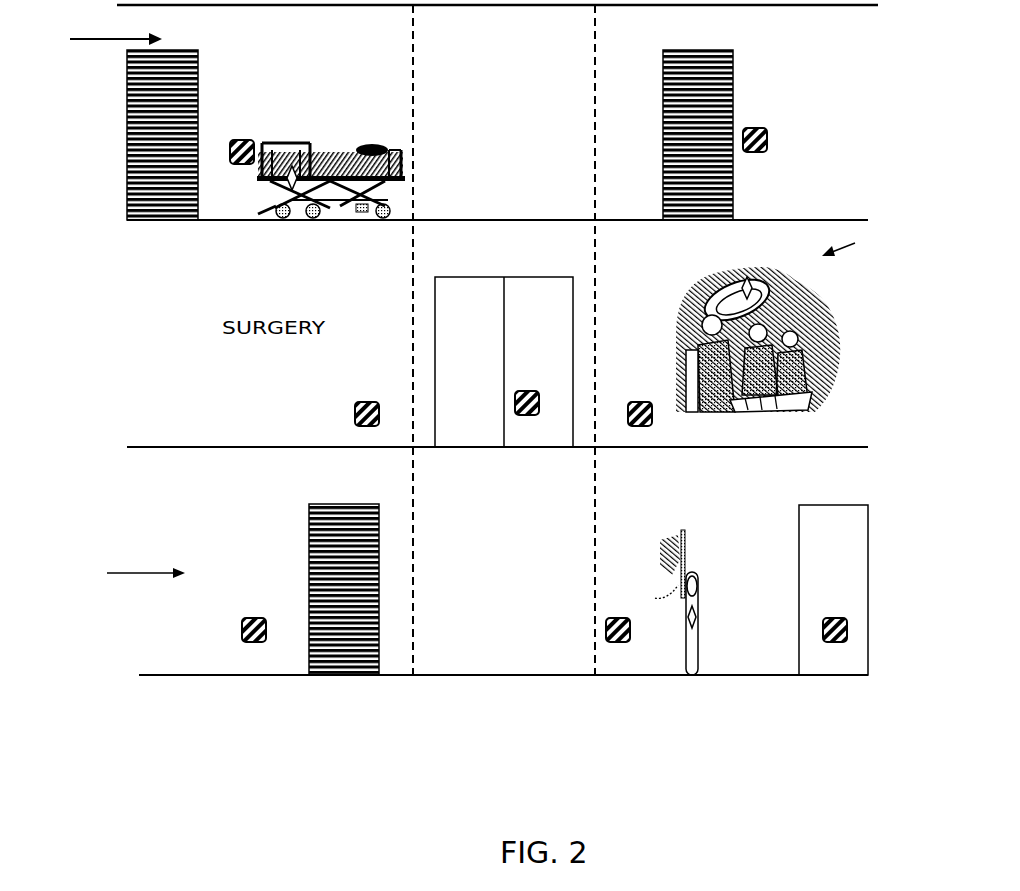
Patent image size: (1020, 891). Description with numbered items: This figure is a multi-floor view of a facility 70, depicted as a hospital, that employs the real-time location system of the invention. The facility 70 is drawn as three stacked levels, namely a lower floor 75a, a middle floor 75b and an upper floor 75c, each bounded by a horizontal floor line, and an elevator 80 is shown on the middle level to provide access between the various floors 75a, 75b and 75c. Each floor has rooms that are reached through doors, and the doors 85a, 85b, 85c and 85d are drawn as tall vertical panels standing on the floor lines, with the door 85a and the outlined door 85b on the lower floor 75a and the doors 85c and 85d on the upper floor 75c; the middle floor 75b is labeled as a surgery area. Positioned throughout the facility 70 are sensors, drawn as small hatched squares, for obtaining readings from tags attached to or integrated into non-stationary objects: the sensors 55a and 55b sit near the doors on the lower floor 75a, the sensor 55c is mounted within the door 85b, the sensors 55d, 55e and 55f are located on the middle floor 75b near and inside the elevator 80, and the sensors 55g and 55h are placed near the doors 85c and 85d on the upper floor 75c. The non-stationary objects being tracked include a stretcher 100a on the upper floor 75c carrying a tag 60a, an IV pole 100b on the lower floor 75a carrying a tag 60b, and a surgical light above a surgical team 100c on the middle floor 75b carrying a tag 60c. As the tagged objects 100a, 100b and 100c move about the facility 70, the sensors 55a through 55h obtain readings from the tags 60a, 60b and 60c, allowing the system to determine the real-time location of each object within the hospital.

The facility 70 is at (358, 737).
The floor 75a is at (130, 566).
The floor 75b is at (855, 246).
The floor 75c is at (99, 34).
The elevator 80 is at (435, 298).
The door 85a is at (309, 515).
The door 85b is at (868, 548).
The door 85c is at (127, 117).
The door 85d is at (733, 106).
The sensor 55a is at (242, 628).
The sensor 55b is at (618, 642).
The sensor 55c is at (845, 642).
The sensor 55d is at (355, 412).
The sensor 55e is at (538, 392).
The sensor 55f is at (650, 402).
The sensor 55g is at (242, 140).
The sensor 55h is at (767, 140).
The tag 60a is at (270, 182).
The tag 60b is at (700, 617).
The tag 60c is at (742, 278).
The non-stationary object 100a is at (333, 155).
The non-stationary object 100b is at (687, 550).
The non-stationary object 100c is at (760, 310).